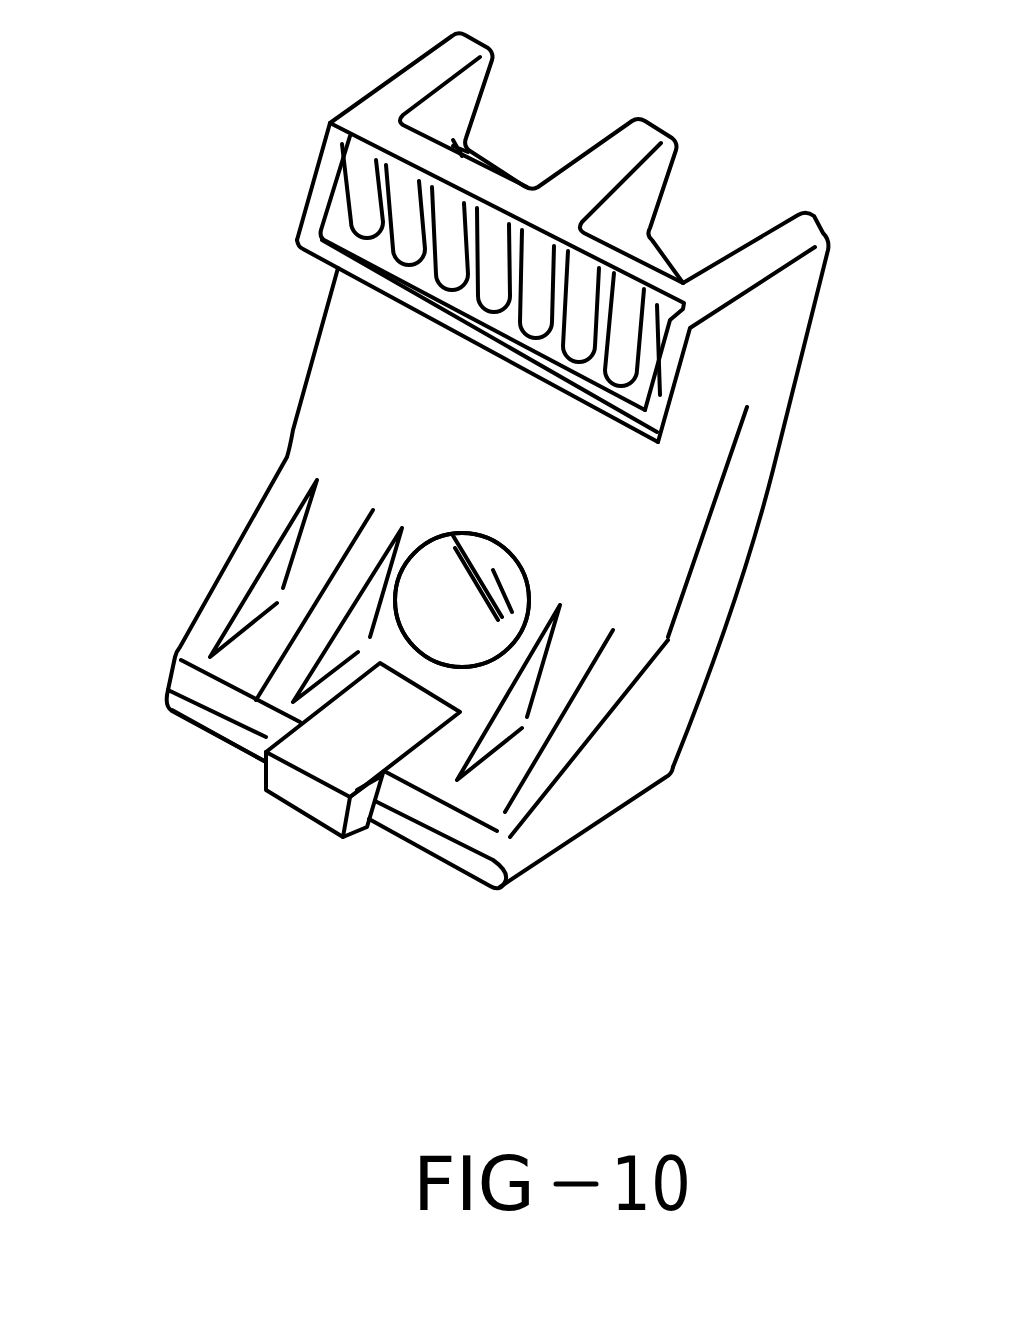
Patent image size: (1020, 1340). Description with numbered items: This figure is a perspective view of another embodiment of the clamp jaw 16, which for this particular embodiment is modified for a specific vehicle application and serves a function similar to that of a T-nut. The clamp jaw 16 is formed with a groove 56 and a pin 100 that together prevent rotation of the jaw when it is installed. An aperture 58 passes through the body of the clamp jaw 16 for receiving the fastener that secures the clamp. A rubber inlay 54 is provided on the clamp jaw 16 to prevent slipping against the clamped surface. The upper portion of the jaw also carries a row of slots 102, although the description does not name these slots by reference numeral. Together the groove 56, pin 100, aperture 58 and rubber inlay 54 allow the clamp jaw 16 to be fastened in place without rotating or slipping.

The clamp jaw 16 is at (230, 250).
The rubber inlay 54 is at (730, 407).
The groove 56 is at (463, 830).
The aperture 58 is at (530, 633).
The pin 100 is at (303, 798).
The slots 102 is at (370, 208).